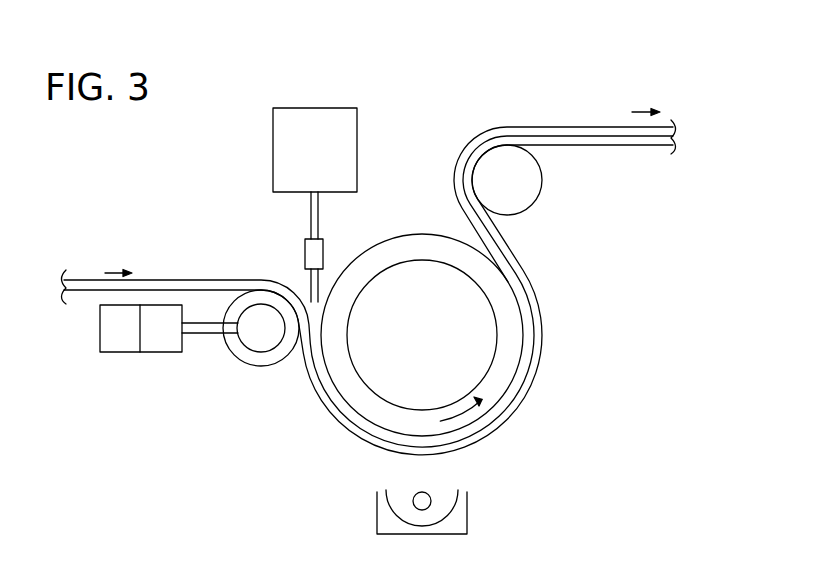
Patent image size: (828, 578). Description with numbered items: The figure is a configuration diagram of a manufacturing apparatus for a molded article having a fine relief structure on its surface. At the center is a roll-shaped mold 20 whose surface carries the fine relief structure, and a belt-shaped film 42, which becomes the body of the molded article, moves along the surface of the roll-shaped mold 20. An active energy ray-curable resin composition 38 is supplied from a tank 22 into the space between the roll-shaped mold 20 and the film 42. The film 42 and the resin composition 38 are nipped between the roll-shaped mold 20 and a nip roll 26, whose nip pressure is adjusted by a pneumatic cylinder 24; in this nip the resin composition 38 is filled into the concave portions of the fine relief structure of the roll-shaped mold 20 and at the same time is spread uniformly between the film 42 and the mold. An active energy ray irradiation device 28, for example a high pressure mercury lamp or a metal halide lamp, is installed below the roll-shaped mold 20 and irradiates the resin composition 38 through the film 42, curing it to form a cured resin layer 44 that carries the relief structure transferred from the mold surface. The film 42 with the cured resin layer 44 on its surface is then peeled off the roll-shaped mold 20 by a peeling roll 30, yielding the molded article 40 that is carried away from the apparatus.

The roll-shaped mold 20 is at (415, 233).
The tank 22 is at (273, 148).
The pneumatic cylinder 24 is at (157, 352).
The nip roll 26 is at (262, 367).
The active energy ray irradiation device 28 is at (467, 509).
The peeling roll 30 is at (542, 175).
The active energy ray-curable resin composition 38 is at (313, 287).
The molded article 40 is at (607, 64).
The belt-shaped film 42 is at (190, 279).
The cured resin layer 44 is at (550, 127).